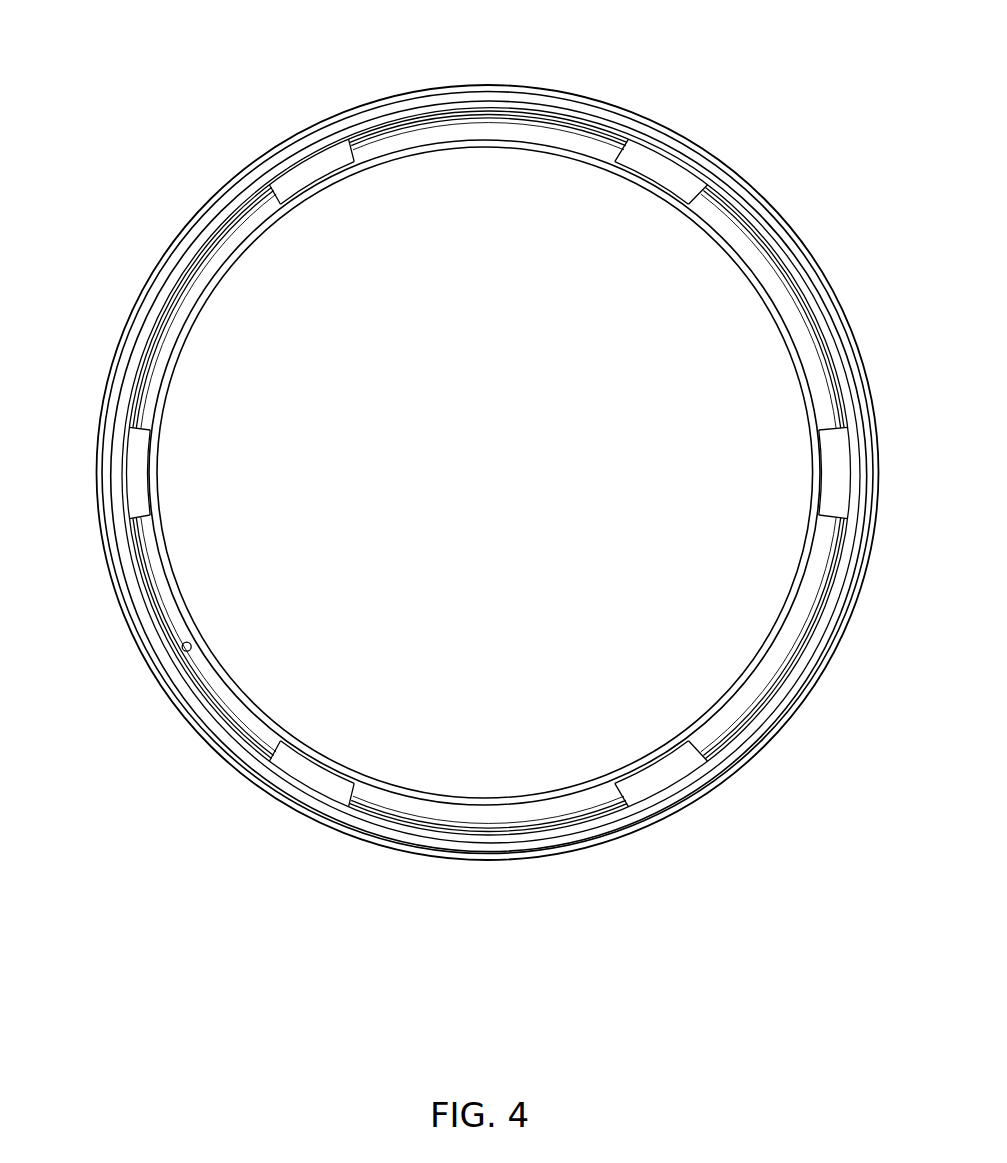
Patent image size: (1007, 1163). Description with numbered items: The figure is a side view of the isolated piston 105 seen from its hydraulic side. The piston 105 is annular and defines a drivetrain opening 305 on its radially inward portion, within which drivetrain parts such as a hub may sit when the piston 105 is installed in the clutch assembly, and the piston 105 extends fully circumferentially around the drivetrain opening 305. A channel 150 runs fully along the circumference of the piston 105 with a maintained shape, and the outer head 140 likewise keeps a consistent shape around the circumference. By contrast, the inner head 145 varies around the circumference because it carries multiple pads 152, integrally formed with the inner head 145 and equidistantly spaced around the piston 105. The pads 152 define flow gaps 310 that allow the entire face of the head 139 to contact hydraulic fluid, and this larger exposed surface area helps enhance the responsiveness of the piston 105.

The piston 105 is at (101, 95).
The head 139 is at (380, 130).
The outer head 140 is at (548, 847).
The inner head 145 is at (481, 128).
The channel 150 is at (233, 734).
The pads 152 is at (655, 172).
The drivetrain opening 305 is at (547, 522).
The flow gaps 310 is at (789, 320).